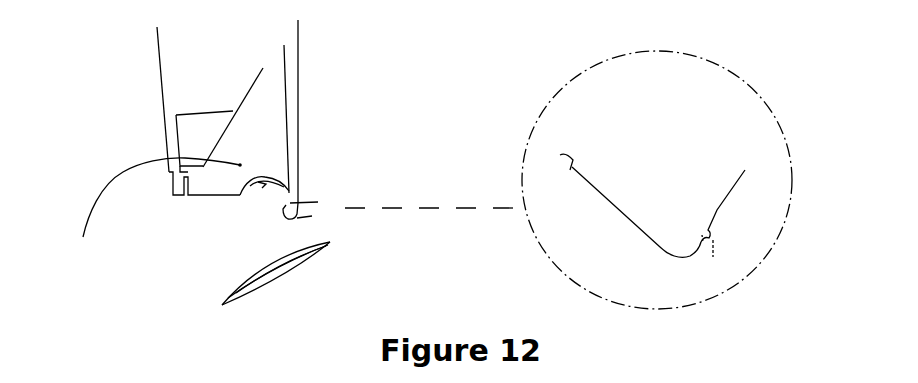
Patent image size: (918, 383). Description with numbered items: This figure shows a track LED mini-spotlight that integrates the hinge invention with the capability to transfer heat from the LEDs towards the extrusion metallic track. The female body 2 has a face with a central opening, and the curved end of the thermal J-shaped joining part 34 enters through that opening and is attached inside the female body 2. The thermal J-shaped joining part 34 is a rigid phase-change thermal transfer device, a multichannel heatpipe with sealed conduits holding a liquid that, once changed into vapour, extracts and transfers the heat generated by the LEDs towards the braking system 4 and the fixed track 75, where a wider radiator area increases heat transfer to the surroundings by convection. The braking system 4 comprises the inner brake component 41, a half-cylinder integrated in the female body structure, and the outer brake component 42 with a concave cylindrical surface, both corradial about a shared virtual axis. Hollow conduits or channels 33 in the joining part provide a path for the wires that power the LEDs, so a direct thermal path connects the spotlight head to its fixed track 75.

The female body 2 is at (200, 290).
The braking system 4 is at (248, 193).
The hollow conduits or channels 33 is at (555, 162).
The thermal J-shaped joining part 34 is at (322, 213).
The inner brake component 41 is at (257, 193).
The outer brake component 42 is at (240, 138).
The fixed track 75 is at (432, 109).